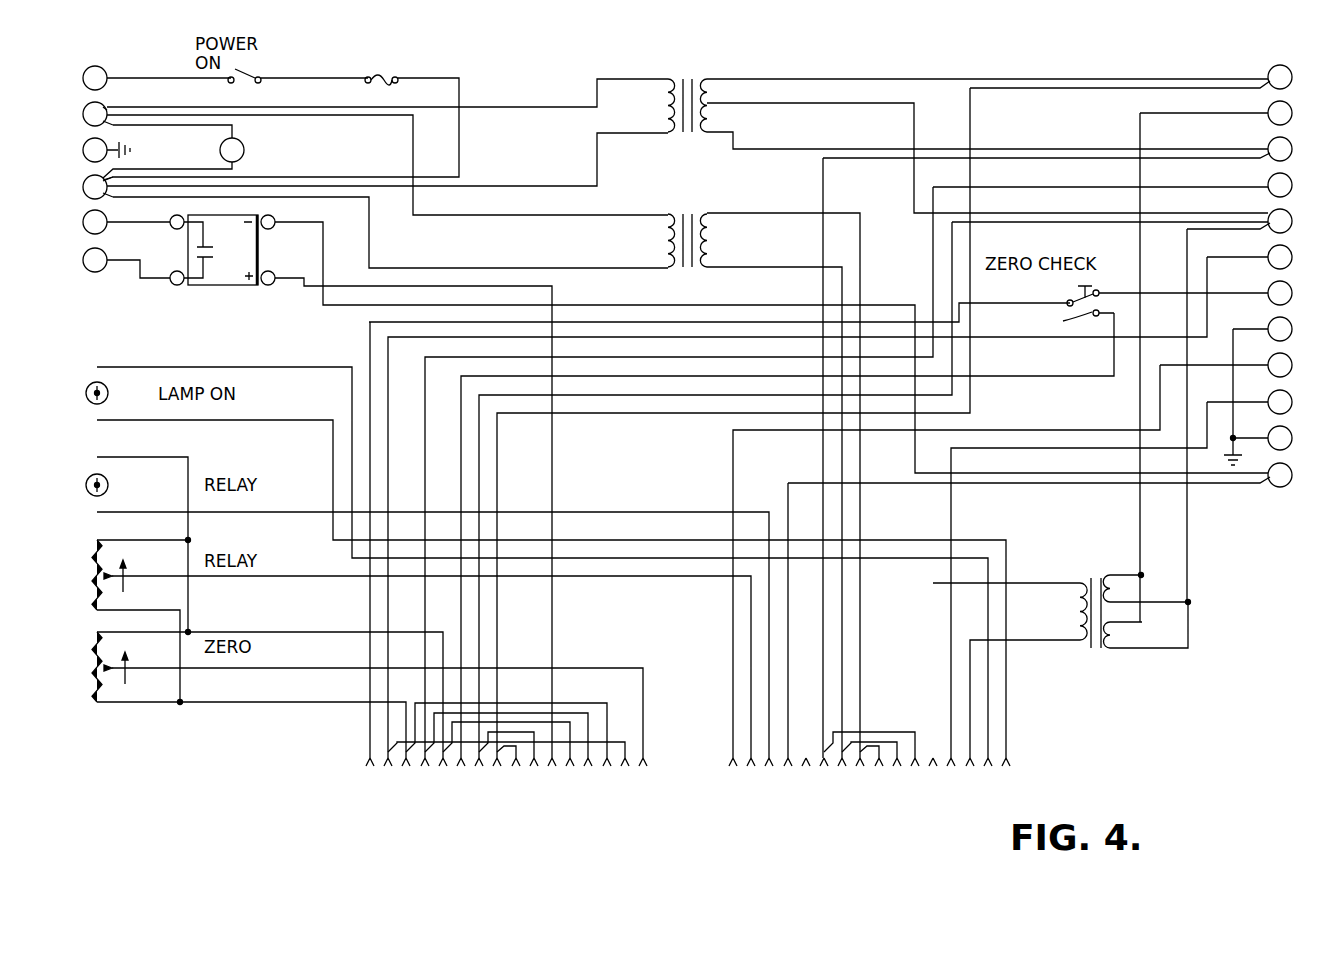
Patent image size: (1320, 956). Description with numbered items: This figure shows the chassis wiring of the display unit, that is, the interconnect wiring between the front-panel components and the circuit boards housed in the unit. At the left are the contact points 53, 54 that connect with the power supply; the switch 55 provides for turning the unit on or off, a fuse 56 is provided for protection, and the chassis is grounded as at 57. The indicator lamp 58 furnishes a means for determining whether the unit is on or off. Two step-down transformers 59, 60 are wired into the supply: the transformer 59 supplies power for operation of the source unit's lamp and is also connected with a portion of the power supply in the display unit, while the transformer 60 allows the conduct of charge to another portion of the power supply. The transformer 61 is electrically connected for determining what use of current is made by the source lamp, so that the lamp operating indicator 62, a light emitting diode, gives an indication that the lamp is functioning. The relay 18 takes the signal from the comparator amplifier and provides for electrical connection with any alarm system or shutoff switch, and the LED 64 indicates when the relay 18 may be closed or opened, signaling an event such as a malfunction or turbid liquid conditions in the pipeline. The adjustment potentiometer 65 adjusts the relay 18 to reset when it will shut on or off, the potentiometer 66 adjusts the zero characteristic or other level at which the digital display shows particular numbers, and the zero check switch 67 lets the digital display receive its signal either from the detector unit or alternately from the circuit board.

The relay 18 is at (250, 284).
The contact point 53 is at (84, 74).
The contact point 54 is at (84, 118).
The switch 55 is at (262, 70).
The fuse 56 is at (395, 73).
The chassis ground 57 is at (84, 153).
The indicator lamp 58 is at (245, 150).
The transformer 59 is at (688, 76).
The transformer 60 is at (690, 212).
The transformer 61 is at (1100, 652).
The lamp operating indicator 62 is at (86, 400).
The LED 64 is at (86, 487).
The adjustment potentiometer 65 is at (92, 596).
The potentiometer 66 is at (95, 662).
The zero check switch 67 is at (1062, 319).